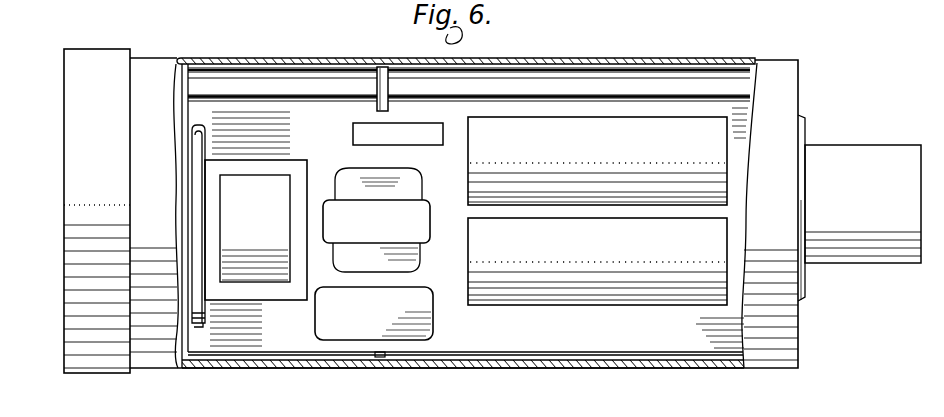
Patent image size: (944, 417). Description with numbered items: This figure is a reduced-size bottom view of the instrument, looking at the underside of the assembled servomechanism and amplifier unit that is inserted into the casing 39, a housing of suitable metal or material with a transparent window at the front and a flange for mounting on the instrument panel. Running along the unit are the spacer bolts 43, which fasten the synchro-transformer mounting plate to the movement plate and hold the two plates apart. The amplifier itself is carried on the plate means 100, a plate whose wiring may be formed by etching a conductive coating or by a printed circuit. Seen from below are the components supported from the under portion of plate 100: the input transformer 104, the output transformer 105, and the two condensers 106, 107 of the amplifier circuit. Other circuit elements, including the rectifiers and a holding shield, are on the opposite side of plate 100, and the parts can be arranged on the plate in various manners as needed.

The casing 39 is at (532, 58).
The spacer bolts 43 is at (255, 84).
The plate means 100 is at (640, 344).
The input transformer 104 is at (255, 184).
The output transformer 105 is at (415, 194).
The condenser 106 is at (718, 153).
The condenser 107 is at (718, 240).